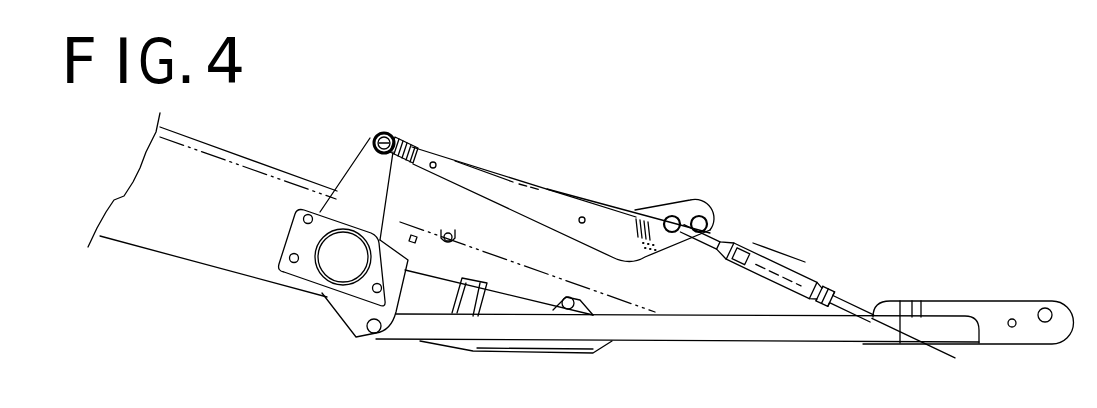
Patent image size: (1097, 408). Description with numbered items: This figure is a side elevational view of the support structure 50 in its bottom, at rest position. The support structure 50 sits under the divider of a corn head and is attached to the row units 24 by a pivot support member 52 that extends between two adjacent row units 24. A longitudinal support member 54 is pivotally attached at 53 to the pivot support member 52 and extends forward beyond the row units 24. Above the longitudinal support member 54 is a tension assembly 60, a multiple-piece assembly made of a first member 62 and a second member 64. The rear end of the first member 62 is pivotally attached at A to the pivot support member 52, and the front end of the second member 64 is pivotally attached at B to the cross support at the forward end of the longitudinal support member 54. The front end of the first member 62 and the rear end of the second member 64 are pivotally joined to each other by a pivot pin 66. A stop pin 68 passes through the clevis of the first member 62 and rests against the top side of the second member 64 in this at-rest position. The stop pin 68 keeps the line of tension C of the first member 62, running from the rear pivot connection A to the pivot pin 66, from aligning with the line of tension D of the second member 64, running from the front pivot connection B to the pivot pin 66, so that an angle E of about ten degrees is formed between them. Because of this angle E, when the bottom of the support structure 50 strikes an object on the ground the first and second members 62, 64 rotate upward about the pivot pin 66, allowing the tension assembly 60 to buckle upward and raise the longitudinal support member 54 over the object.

The row unit 24 is at (287, 164).
The support structure 50 is at (844, 201).
The pivot support member 52 is at (310, 274).
The pivotal attachment 53 is at (372, 339).
The longitudinal support member 54 is at (687, 343).
The tension assembly 60 is at (692, 194).
The first member 62 is at (520, 216).
The second member 64 is at (745, 270).
The pivot pin 66 is at (683, 215).
The stop pin 68 is at (713, 217).
The rear pivot connection A is at (372, 133).
The front pivot connection B is at (888, 302).
The line of tension of the first member C is at (512, 177).
The line of tension of the second member D is at (638, 198).
The angle E is at (598, 198).